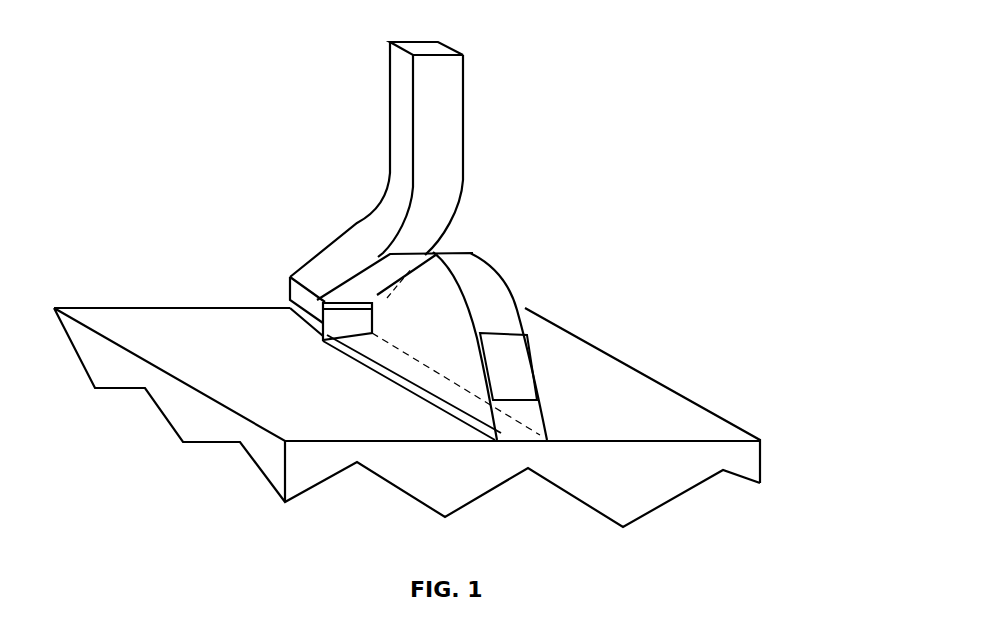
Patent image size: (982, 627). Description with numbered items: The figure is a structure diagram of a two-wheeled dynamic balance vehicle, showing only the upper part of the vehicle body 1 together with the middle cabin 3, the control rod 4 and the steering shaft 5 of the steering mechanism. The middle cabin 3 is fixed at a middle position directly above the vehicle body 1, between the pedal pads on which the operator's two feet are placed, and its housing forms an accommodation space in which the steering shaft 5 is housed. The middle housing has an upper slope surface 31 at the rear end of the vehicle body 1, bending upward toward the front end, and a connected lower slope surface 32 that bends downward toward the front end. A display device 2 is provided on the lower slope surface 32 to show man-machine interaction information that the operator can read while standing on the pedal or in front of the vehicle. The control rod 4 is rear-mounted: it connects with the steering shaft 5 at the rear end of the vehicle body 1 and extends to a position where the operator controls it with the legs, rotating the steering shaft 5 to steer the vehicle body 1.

The vehicle body 1 is at (637, 418).
The display device 2 is at (527, 357).
The middle cabin 3 is at (470, 262).
The upper slope surface 31 is at (360, 255).
The lower slope surface 32 is at (515, 300).
The control rod 4 is at (457, 185).
The steering shaft 5 is at (300, 302).